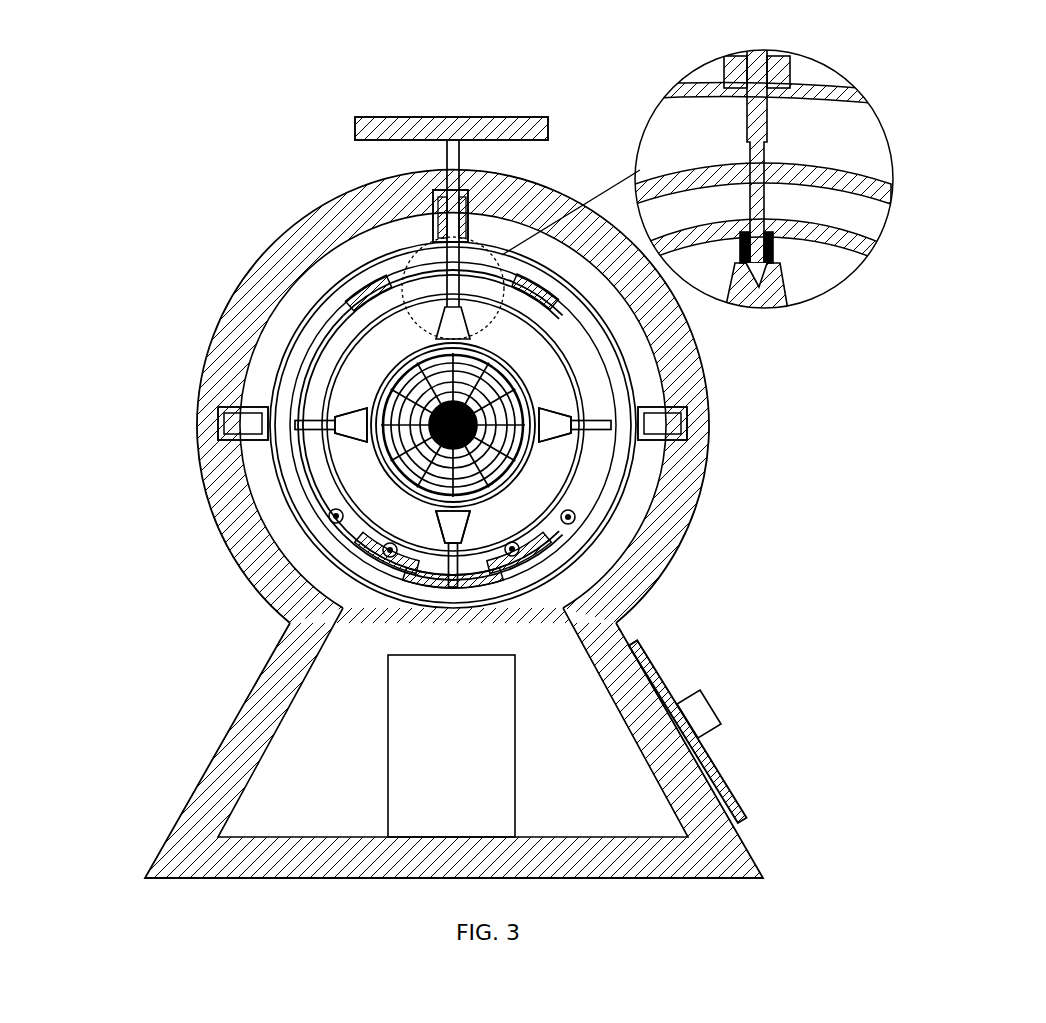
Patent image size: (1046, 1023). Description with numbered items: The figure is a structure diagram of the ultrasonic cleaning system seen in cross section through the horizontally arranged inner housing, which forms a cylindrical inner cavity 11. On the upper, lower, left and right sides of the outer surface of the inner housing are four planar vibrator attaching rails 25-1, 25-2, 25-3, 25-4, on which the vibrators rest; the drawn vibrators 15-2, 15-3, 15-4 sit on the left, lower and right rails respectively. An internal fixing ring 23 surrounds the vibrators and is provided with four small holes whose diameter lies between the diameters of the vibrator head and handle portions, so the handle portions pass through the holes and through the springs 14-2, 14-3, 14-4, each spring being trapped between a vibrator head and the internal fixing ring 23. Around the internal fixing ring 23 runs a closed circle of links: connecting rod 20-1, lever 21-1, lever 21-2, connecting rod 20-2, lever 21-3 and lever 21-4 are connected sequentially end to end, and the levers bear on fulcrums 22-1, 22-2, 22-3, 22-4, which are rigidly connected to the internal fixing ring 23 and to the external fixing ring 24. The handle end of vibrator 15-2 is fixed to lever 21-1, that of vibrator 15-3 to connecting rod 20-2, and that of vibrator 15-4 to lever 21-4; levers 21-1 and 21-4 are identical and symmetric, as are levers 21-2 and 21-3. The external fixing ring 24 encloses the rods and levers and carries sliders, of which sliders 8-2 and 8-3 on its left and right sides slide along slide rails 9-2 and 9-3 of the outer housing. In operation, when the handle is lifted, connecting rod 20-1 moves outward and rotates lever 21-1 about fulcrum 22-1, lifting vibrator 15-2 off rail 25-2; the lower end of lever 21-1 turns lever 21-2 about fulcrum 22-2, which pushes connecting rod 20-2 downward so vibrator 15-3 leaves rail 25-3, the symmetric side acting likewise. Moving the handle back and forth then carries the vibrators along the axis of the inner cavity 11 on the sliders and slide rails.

The slider 8-2 is at (252, 422).
The slider 8-3 is at (655, 422).
The slide rail 9-2 is at (213, 407).
The slide rail 9-3 is at (692, 430).
The inner cavity 11 is at (520, 368).
The spring 14-2 is at (353, 422).
The spring 14-3 is at (452, 540).
The spring 14-4 is at (548, 432).
The vibrator 15-2 is at (327, 420).
The vibrator 15-3 is at (448, 525).
The vibrator 15-4 is at (573, 425).
The connecting rod 20-1 is at (430, 276).
The connecting rod 20-2 is at (720, 718).
The lever 21-1 is at (295, 462).
The lever 21-2 is at (392, 565).
The lever 21-3 is at (542, 548).
The lever 21-4 is at (590, 340).
The fulcrum 22-1 is at (336, 516).
The fulcrum 22-2 is at (390, 550).
The fulcrum 22-3 is at (512, 549).
The fulcrum 22-4 is at (568, 517).
The internal fixing ring 23 is at (430, 296).
The external fixing ring 24 is at (287, 345).
The vibrator attaching rail 25-1 is at (438, 337).
The vibrator attaching rail 25-2 is at (360, 407).
The vibrator attaching rail 25-3 is at (473, 513).
The vibrator attaching rail 25-4 is at (543, 445).